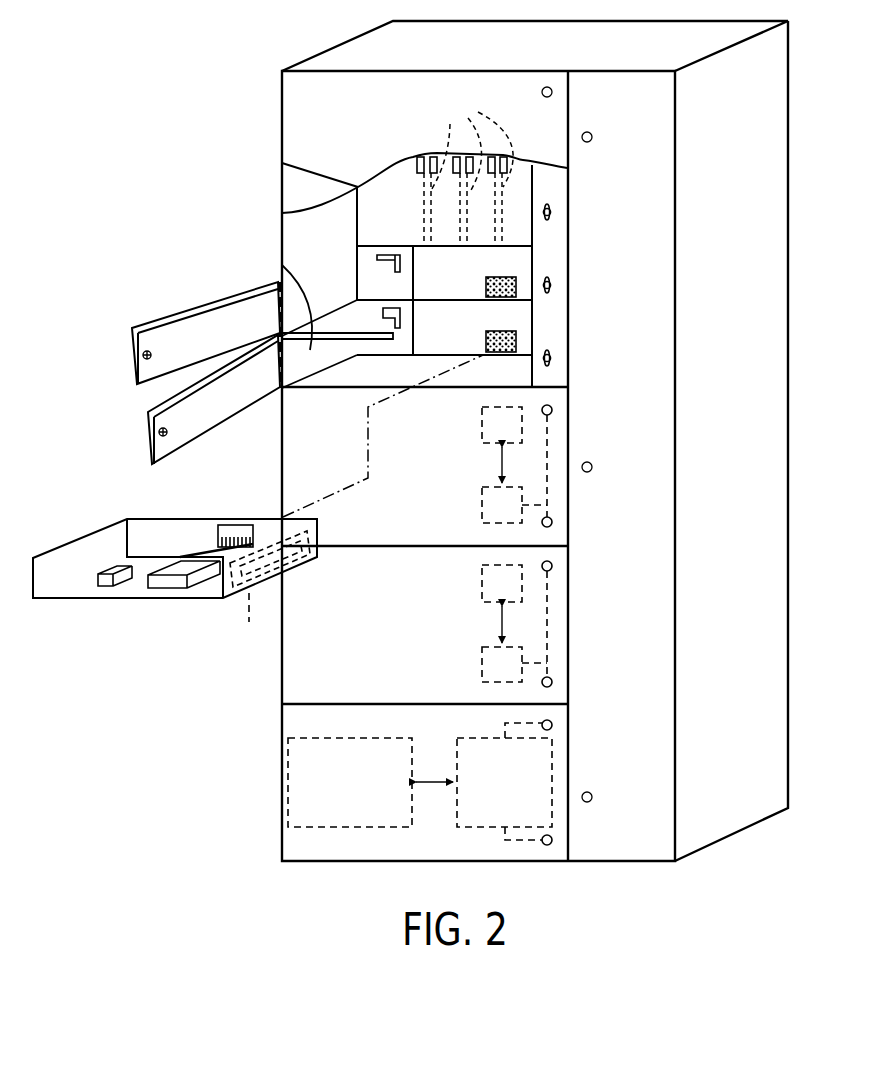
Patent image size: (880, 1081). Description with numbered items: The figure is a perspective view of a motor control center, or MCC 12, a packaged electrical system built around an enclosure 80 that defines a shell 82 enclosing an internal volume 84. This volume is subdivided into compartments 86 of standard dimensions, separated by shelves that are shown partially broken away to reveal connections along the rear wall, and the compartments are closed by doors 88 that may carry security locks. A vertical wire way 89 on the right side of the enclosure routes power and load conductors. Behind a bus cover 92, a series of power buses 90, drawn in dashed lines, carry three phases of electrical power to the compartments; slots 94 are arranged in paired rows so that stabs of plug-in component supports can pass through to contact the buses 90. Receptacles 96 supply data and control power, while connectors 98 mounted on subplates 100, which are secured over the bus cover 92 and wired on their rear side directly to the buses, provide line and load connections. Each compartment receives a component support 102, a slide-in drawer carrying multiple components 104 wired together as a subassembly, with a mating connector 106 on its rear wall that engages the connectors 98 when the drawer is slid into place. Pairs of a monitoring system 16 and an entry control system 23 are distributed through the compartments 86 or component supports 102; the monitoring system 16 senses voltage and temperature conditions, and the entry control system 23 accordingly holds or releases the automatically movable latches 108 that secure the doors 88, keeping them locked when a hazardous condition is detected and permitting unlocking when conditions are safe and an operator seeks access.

The motor control center (MCC) 12 is at (814, 331).
The monitoring system 16 is at (514, 438).
The entry control system 23 is at (514, 518).
The enclosure 80 is at (790, 108).
The shell 82 is at (750, 229).
The internal volume 84 is at (310, 232).
The compartments 86 is at (307, 258).
The doors 88 is at (227, 342).
The vertical wire way 89 is at (665, 523).
The power buses 90 is at (468, 172).
The bus cover 92 is at (282, 162).
The slots 94 is at (437, 156).
The receptacles 96 is at (396, 258).
The connectors 98 is at (516, 332).
The subplates 100 is at (462, 292).
The component support 102 is at (295, 565).
The components 104 is at (163, 582).
The mating connector 106 is at (318, 533).
The latches 108 is at (553, 408).